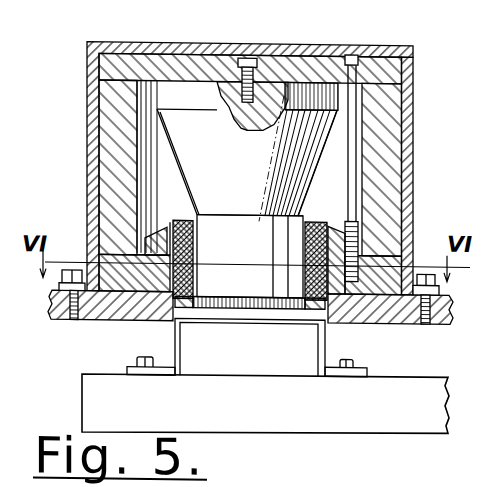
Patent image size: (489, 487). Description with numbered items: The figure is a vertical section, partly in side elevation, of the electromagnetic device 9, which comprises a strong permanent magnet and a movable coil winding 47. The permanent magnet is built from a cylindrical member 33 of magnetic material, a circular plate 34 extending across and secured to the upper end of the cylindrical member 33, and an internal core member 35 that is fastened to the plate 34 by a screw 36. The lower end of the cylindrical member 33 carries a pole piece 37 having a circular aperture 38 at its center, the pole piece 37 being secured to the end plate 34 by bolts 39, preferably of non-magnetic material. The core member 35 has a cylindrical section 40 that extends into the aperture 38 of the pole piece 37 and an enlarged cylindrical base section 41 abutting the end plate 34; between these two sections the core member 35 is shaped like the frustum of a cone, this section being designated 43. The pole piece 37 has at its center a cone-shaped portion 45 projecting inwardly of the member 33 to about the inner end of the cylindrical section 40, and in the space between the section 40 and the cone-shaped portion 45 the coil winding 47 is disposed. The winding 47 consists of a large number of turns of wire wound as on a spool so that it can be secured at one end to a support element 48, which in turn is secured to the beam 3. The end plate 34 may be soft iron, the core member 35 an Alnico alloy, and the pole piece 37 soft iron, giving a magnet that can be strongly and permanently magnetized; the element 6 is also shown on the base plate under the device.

The beam 3 is at (407, 375).
The base plate 6 is at (447, 321).
The electromagnetic device 9 is at (70, 87).
The cylindrical member 33 is at (392, 142).
The circular plate 34 is at (393, 67).
The internal core member 35 is at (336, 149).
The screw 36 is at (262, 59).
The pole piece 37 is at (422, 240).
The circular aperture 38 is at (327, 220).
The bolts 39 is at (352, 173).
The cylindrical section 40 is at (260, 280).
The enlarged cylindrical base section 41 is at (336, 98).
The frustum of a cone section 43 is at (259, 173).
The cone-shaped portion 45 is at (160, 230).
The coil winding 47 is at (182, 215).
The support element 48 is at (181, 336).